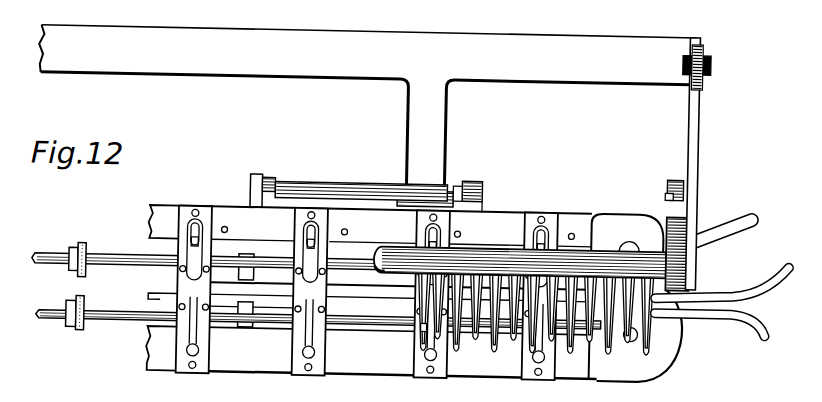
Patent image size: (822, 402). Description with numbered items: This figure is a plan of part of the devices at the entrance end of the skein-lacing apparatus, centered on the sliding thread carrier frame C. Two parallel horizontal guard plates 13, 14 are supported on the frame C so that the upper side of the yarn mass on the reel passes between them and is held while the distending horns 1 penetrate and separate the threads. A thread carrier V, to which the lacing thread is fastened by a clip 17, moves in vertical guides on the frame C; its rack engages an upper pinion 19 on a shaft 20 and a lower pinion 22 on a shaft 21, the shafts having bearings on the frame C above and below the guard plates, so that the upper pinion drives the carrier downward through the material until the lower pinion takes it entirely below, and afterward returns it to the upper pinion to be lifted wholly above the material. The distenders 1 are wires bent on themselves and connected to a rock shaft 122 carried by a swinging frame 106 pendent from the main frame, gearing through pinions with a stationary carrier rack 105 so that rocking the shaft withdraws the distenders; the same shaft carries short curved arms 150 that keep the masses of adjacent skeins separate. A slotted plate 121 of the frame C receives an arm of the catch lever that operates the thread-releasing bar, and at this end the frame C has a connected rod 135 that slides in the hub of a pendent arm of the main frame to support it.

The distending horns 1 is at (603, 341).
The guard plate 13 is at (713, 340).
The guard plate 14 is at (770, 268).
The clip 17 is at (312, 229).
The upper pinion 19 is at (86, 251).
The upper shaft 20 is at (44, 248).
The lower shaft 21 is at (43, 319).
The lower pinion 22 is at (83, 328).
The stationary carrier rack 105 is at (688, 194).
The swinging frame 106 is at (688, 144).
The slotted plate 121 is at (503, 208).
The rock shaft 122 is at (572, 250).
The connected rod 135 is at (328, 183).
The short curved arms 150 is at (420, 322).
The thread carrier frame C is at (164, 206).
The thread carrier V is at (205, 231).